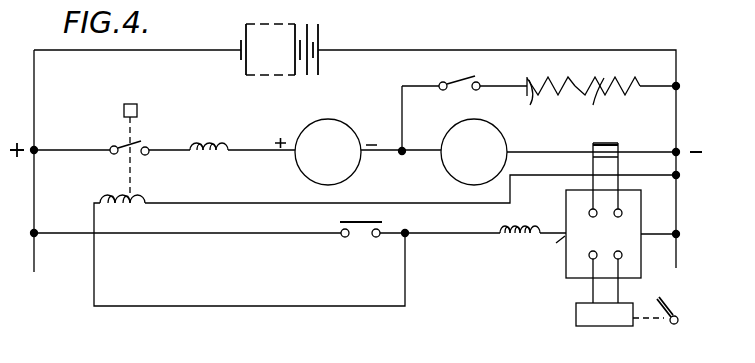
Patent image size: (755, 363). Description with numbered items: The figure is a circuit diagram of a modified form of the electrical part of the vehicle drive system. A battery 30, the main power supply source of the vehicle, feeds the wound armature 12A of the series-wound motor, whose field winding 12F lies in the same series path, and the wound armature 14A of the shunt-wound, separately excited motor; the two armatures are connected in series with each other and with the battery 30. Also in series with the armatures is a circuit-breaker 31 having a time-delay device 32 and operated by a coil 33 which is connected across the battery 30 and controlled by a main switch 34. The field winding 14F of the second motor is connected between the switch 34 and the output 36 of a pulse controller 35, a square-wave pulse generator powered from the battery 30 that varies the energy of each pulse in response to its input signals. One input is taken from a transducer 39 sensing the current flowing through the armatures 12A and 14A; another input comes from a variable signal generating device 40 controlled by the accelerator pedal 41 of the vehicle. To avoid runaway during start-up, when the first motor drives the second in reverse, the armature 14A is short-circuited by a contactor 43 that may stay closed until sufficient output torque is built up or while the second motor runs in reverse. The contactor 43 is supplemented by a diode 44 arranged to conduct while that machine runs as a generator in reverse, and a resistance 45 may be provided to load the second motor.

The battery 30 is at (240, 44).
The time-delay device 32 is at (137, 107).
The circuit-breaker 31 is at (124, 141).
The field winding 12F is at (210, 145).
The wound armature 12A is at (342, 166).
The wound armature 14A is at (488, 166).
The contactor 43 is at (455, 79).
The diode 44 is at (544, 109).
The resistance 45 is at (607, 109).
The transducer 39 is at (607, 143).
The coil 33 is at (140, 193).
The main switch 34 is at (376, 266).
The field winding 14F is at (513, 242).
The output 36 is at (547, 255).
The pulse controller 35 is at (624, 246).
The variable signal generating device 40 is at (578, 315).
The accelerator pedal 41 is at (672, 311).